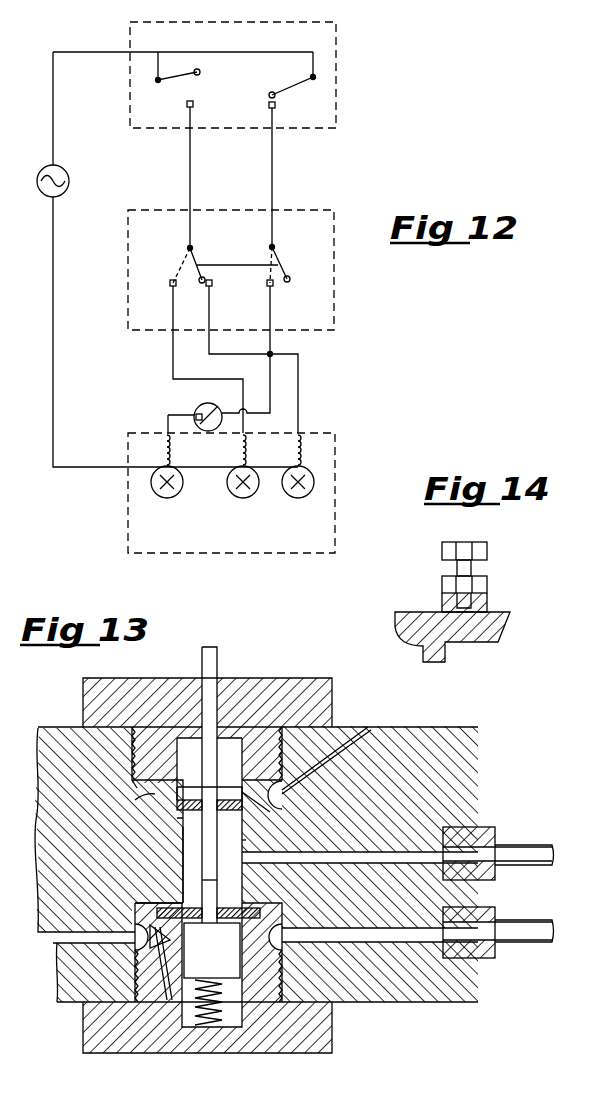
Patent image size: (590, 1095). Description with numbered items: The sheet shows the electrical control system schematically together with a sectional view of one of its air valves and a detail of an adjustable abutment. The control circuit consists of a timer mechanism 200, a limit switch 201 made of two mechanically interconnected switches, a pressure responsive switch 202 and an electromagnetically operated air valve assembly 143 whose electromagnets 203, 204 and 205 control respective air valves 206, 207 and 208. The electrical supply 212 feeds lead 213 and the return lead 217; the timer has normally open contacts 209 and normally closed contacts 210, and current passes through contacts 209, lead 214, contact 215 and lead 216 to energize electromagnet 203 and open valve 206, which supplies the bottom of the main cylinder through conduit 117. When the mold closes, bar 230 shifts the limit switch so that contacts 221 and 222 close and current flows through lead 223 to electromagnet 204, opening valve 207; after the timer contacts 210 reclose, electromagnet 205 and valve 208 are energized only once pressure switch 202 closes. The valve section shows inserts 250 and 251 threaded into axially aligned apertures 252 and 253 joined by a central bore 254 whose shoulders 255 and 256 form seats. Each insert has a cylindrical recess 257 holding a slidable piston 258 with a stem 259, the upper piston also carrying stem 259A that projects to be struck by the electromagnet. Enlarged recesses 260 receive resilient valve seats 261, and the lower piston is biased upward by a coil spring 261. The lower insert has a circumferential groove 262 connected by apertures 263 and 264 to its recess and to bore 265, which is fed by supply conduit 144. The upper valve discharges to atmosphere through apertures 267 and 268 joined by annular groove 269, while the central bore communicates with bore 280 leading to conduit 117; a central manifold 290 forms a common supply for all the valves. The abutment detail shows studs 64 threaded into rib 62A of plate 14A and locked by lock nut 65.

In FIG. 12, the timer mechanism 200 is at (336, 106).
In FIG. 12, the limit switch 201 is at (334, 290).
In FIG. 12, the electromagnetically operated air valve assembly 143 is at (335, 470).
In FIG. 12, the lead 213 is at (98, 52).
In FIG. 12, the electrical supply 212 is at (69, 181).
In FIG. 12, the return conductor 217 is at (53, 307).
In FIG. 12, the normally open contacts 209 is at (197, 100).
In FIG. 12, the normally closed contacts 210 is at (275, 105).
In FIG. 12, the lead 214 is at (190, 184).
In FIG. 12, the bar 230 is at (225, 263).
In FIG. 12, the contact 221 is at (170, 283).
In FIG. 12, the contact 215 is at (212, 283).
In FIG. 12, the contact 222 is at (273, 283).
In FIG. 12, the lead 216 is at (209, 306).
In FIG. 12, the lead 223 is at (173, 353).
In FIG. 12, the pressure responsive switch 202 is at (210, 403).
In FIG. 12, the electromagnet 203 is at (302, 440).
In FIG. 12, the electromagnet 204 is at (247, 447).
In FIG. 12, the electromagnet 205 is at (171, 447).
In FIG. 12, the air valve 206 is at (308, 495).
In FIG. 12, the air valve 207 is at (252, 496).
In FIG. 12, the air valve 208 is at (178, 496).
In FIG. 14, the stud 64 is at (487, 550).
In FIG. 14, the lock nut 65 is at (488, 582).
In FIG. 14, the rib 62A is at (487, 600).
In FIG. 14, the plate 14A is at (505, 627).
In FIG. 13, the insert 250 is at (332, 700).
In FIG. 13, the insert 251 is at (332, 1023).
In FIG. 13, the aperture 252 is at (282, 748).
In FIG. 13, the aperture 253 is at (287, 975).
In FIG. 13, the central bore 254 is at (246, 840).
In FIG. 13, the shoulder 255 is at (174, 832).
In FIG. 13, the shoulder 256 is at (162, 902).
In FIG. 13, the cylindrical recess 257 is at (237, 1068).
In FIG. 13, the piston 258 is at (226, 935).
In FIG. 13, the stem 259 is at (239, 880).
In FIG. 13, the stem 259A is at (217, 659).
In FIG. 13, the enlarged recess 260 is at (270, 812).
In FIG. 13, the resilient valve seat 261 is at (205, 1068).
In FIG. 13, the circumferential groove 262 is at (170, 940).
In FIG. 13, the apertures 263 is at (135, 925).
In FIG. 13, the apertures 264 is at (170, 968).
In FIG. 13, the bore 265 is at (370, 935).
In FIG. 13, the aperture 267 is at (135, 802).
In FIG. 13, the aperture 268 is at (365, 728).
In FIG. 13, the annular groove 269 is at (132, 786).
In FIG. 13, the bore 280 is at (370, 852).
In FIG. 13, the central manifold 290 is at (53, 937).
In FIG. 13, the conduit 117 is at (510, 845).
In FIG. 13, the conduit 144 is at (510, 920).